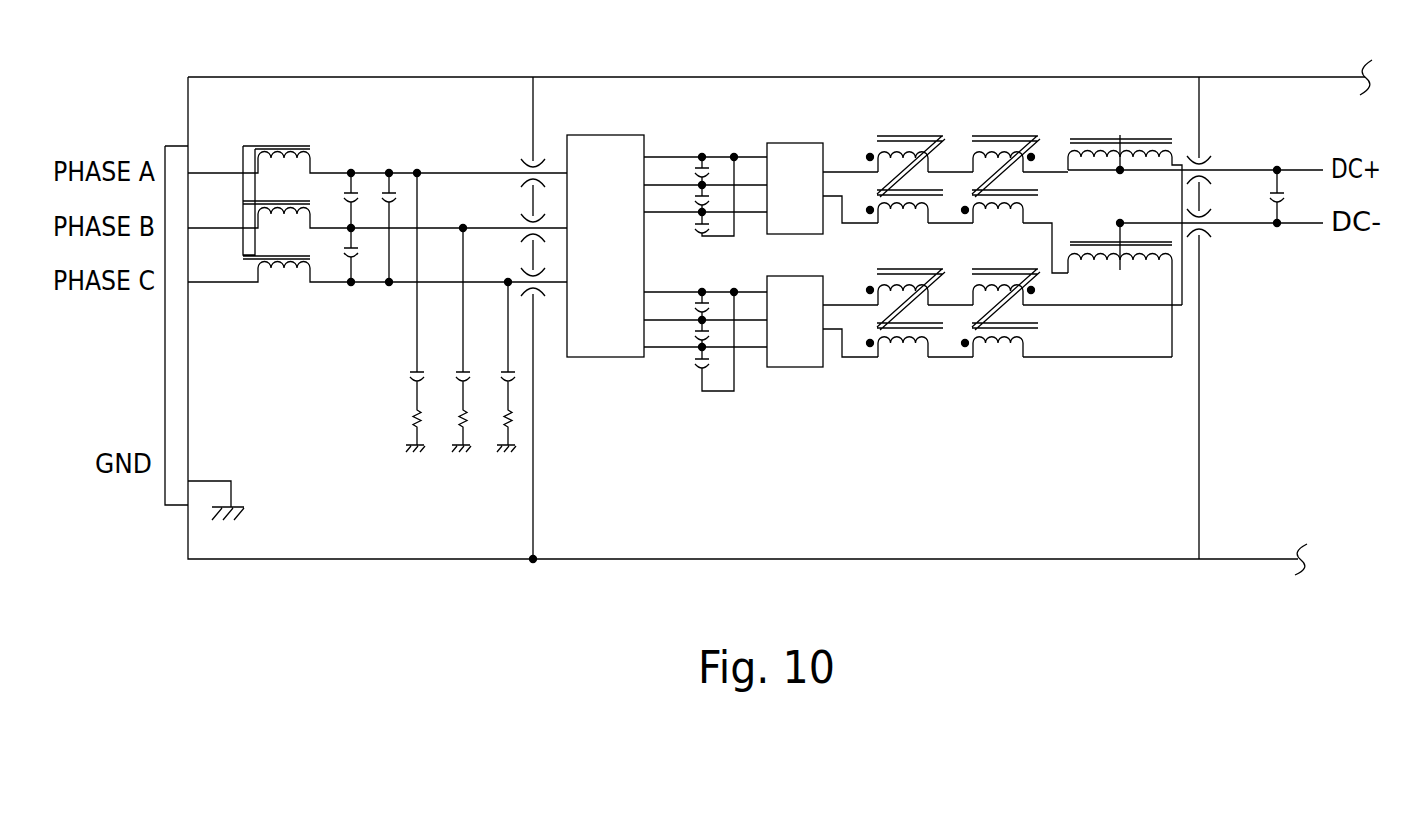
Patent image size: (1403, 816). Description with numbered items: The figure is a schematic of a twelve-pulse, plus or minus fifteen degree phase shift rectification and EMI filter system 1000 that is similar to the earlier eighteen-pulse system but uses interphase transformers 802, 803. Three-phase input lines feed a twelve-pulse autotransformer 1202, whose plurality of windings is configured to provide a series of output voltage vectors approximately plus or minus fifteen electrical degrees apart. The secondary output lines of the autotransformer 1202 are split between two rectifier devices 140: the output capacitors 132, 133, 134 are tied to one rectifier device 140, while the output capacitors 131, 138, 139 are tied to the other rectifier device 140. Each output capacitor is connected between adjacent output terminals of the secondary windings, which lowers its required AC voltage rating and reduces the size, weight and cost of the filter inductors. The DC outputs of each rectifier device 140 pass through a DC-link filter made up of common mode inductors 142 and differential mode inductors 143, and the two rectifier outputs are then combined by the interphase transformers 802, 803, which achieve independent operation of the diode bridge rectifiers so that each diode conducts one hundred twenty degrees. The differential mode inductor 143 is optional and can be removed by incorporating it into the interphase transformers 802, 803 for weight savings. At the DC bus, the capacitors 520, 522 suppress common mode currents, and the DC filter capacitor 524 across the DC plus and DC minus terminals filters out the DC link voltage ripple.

The rectification and EMI filter system 1000 is at (146, 100).
The 12-pulse autotransformer 1202 is at (633, 258).
The second output capacitor 132 is at (678, 171).
The third output capacitor 133 is at (678, 198).
The output capacitor 134 is at (678, 226).
The output capacitor 138 is at (678, 308).
The output capacitor 139 is at (678, 334).
The first output capacitor 131 is at (678, 363).
The rectifier device 140 is at (800, 143).
The common mode inductor 142 is at (907, 124).
The differential mode inductor 143 is at (1003, 209).
The interphase transformer 802 is at (1146, 131).
The interphase transformer 803 is at (1146, 263).
The capacitor 520 is at (1208, 163).
The capacitor 522 is at (1208, 231).
The DC filter capacitor 524 is at (1286, 193).